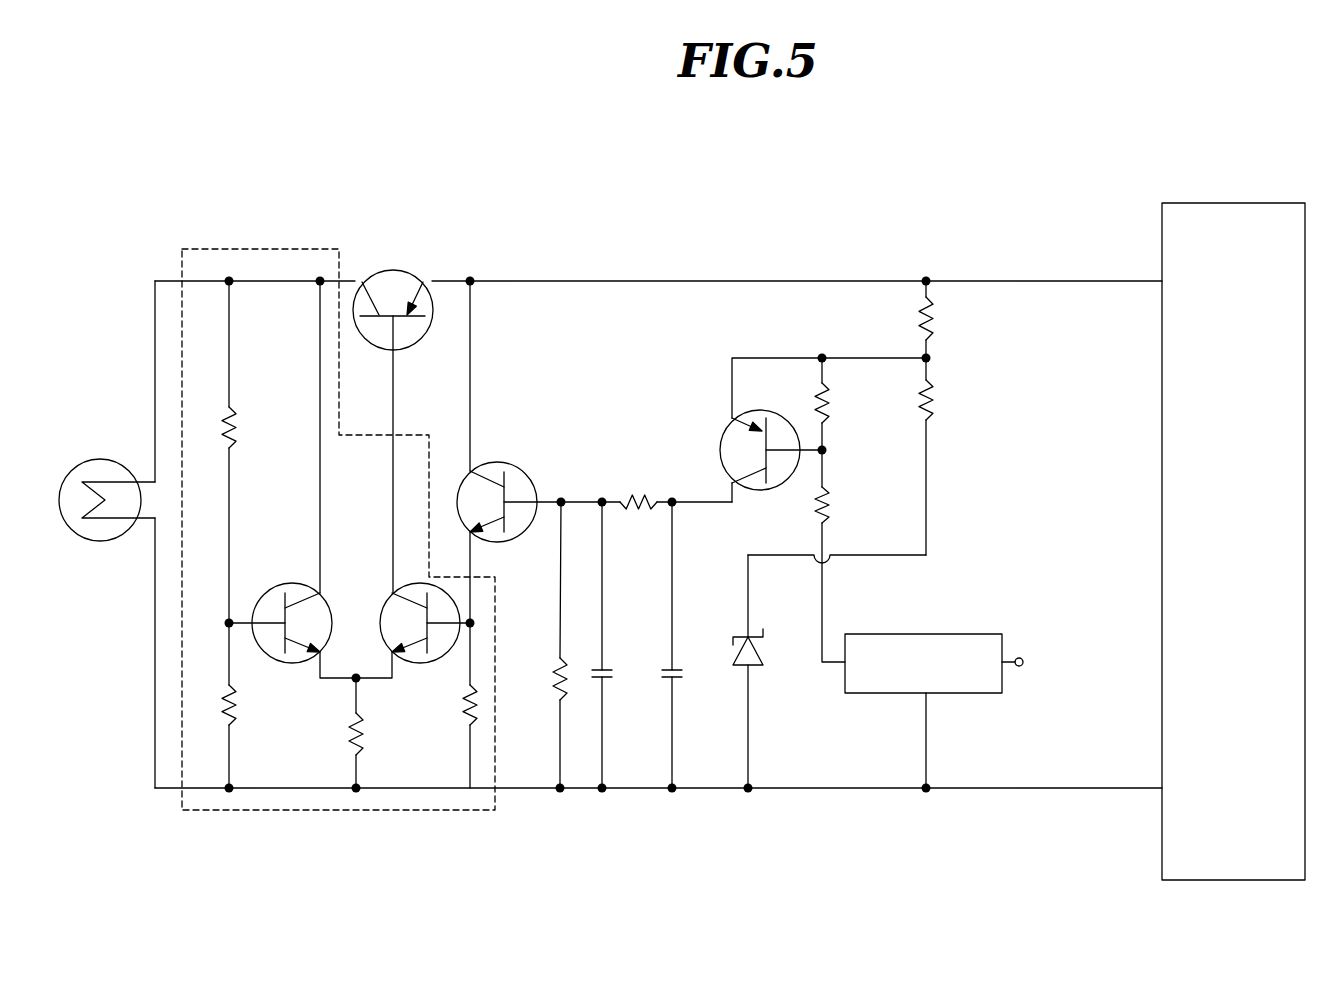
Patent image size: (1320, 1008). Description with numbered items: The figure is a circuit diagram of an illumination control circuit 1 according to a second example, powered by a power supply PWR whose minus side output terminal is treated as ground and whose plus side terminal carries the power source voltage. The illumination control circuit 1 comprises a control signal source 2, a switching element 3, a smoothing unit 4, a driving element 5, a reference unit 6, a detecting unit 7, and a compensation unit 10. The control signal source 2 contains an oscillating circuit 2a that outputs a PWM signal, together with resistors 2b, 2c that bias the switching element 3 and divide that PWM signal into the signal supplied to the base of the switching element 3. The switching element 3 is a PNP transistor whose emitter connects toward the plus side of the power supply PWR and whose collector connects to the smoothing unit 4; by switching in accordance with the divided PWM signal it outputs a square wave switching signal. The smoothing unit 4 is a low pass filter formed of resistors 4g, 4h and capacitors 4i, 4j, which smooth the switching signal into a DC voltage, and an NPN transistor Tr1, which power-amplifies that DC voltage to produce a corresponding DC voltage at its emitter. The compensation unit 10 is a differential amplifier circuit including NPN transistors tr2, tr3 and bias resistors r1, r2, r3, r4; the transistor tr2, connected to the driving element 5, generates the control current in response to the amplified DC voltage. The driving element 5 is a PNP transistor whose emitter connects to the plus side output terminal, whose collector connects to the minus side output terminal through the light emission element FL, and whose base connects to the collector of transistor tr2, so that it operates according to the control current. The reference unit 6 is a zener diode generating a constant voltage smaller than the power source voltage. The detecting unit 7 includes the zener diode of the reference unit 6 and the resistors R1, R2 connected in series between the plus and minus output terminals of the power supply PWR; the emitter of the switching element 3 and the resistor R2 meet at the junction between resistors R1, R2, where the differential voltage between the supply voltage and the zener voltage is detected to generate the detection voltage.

The illumination control circuit 1 is at (614, 231).
The control signal source 2 is at (954, 597).
The oscillating circuit 2a is at (900, 634).
The resistor 2b is at (830, 407).
The resistor 2c is at (830, 510).
The switching element 3 is at (725, 429).
The smoothing unit 4 is at (619, 436).
The resistor 4g is at (638, 495).
The resistor 4h is at (555, 668).
The capacitor 4i is at (678, 665).
The capacitor 4j is at (610, 666).
The driving element 5 is at (393, 270).
The reference unit 6 is at (764, 652).
The detecting unit 7 is at (889, 341).
The compensation unit 10 is at (268, 248).
The light emission element FL is at (101, 460).
The power supply PWR is at (1243, 202).
The NPN transistor Tr1 is at (497, 462).
The NPN transistor tr2 is at (387, 592).
The NPN transistor tr3 is at (290, 585).
The bias resistor r1 is at (461, 700).
The bias resistor r2 is at (349, 736).
The bias resistor r3 is at (238, 430).
The bias resistor r4 is at (238, 705).
The resistor R1 is at (935, 405).
The resistor R2 is at (935, 325).